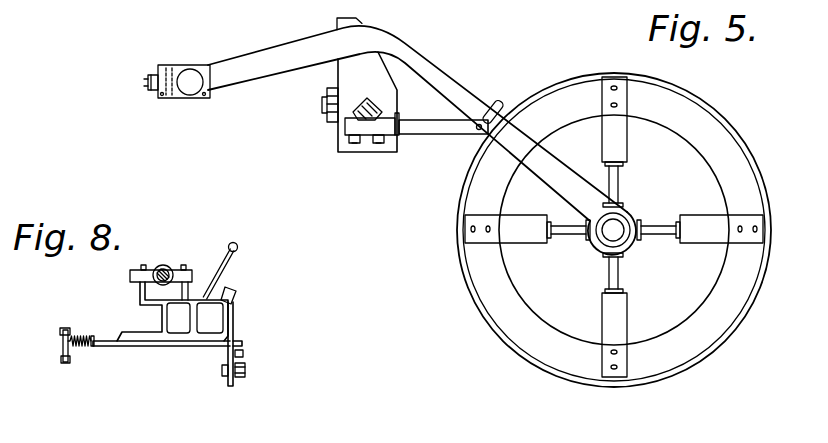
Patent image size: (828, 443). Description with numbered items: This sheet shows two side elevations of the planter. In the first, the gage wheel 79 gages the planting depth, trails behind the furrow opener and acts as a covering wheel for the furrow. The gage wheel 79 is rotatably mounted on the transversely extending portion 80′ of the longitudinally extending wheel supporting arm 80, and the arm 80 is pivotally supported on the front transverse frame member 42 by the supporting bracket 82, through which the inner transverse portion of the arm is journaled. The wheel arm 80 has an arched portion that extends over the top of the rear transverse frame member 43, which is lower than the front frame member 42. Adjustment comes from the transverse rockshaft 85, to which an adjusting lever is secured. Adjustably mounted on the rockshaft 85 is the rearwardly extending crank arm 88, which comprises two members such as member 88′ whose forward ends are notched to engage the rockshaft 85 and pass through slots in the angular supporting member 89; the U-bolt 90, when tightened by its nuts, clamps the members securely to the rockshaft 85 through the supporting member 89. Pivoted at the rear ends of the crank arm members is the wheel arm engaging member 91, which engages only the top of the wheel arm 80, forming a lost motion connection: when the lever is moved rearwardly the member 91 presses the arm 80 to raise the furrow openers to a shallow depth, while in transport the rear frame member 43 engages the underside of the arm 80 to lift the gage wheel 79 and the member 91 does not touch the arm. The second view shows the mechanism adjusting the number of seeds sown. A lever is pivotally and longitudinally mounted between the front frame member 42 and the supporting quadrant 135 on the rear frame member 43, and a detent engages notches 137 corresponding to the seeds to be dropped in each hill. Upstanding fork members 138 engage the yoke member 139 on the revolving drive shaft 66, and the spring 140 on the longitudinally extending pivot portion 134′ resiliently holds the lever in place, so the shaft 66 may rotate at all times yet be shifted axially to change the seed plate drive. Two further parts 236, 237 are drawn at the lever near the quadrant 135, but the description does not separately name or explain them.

In FIG. 5, the gage wheel 79 is at (698, 118).
In FIG. 5, the wheel supporting arm 80 is at (287, 63).
In FIG. 5, the transversely extending portion 80′ is at (613, 228).
In FIG. 5, the supporting bracket 82 is at (177, 64).
In FIG. 5, the front transverse frame member 42 is at (158, 100).
In FIG. 8, the front transverse frame member 42 is at (65, 364).
In FIG. 5, the rear transverse frame member 43 is at (331, 115).
In FIG. 8, the rear transverse frame member 43 is at (305, 401).
In FIG. 5, the transverse rockshaft 85 is at (368, 127).
In FIG. 5, the crank arm 88 is at (450, 134).
In FIG. 5, the crank arm member 88′ is at (420, 127).
In FIG. 5, the angular supporting member 89 is at (397, 127).
In FIG. 5, the U-bolt 90 is at (357, 108).
In FIG. 5, the wheel arm engaging member 91 is at (497, 103).
In FIG. 8, the drive shaft 66 is at (157, 282).
In FIG. 8, the pivot portion 134′ is at (192, 348).
In FIG. 8, the supporting quadrant 135 is at (236, 327).
In FIG. 8, the notches 137 is at (234, 303).
In FIG. 8, the upstanding fork member 138 is at (167, 265).
In FIG. 8, the yoke member 139 is at (133, 276).
In FIG. 8, the spring 140 is at (77, 349).
In FIG. 8, the pivot 236 is at (228, 292).
In FIG. 8, the handle knob 237 is at (307, 268).